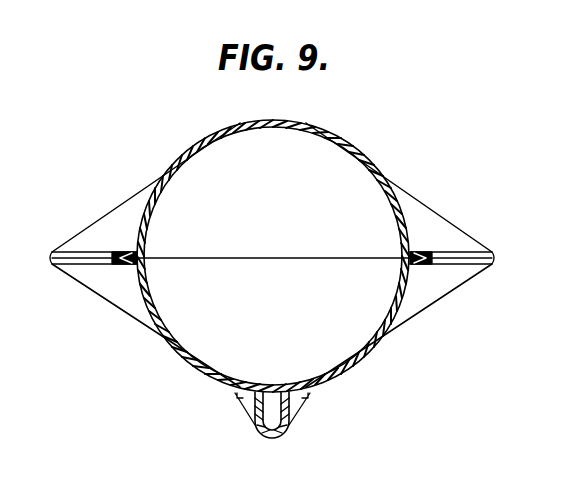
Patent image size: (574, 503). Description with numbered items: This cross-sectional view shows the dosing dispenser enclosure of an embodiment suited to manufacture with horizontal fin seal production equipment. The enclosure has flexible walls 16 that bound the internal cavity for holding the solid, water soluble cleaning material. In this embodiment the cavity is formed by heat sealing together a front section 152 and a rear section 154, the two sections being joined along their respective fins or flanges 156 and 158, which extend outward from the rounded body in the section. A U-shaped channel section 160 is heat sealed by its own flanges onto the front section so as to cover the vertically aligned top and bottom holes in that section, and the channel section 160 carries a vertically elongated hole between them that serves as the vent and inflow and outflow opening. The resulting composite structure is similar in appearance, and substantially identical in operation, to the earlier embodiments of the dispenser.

The flexible walls 16 is at (283, 225).
The front section 152 is at (333, 138).
The rear section 154 is at (355, 364).
The fin or flange 156 is at (123, 252).
The fin or flange 158 is at (125, 265).
The U-shaped channel section 160 is at (252, 427).